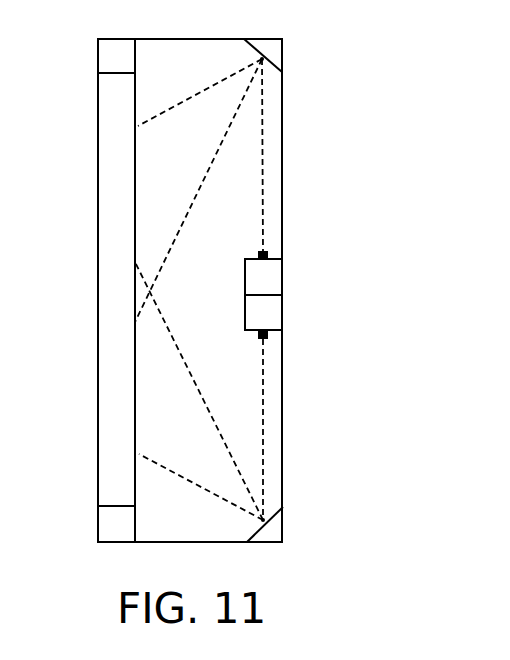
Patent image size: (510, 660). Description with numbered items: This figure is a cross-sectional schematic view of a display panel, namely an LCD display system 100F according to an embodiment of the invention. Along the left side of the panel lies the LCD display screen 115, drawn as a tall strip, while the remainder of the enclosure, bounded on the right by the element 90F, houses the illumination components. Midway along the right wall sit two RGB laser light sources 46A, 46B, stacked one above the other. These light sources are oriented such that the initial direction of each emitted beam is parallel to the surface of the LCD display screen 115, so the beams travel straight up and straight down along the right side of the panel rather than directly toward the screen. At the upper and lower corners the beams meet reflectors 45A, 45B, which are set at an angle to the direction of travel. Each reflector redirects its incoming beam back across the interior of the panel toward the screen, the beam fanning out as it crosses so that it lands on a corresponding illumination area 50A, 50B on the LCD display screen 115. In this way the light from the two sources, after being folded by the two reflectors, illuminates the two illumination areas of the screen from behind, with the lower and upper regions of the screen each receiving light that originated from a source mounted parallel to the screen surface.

The LCD display system 100F is at (318, 110).
The housing wall 90F is at (282, 173).
The LCD display screen 115 is at (98, 267).
The illumination area 50A is at (135, 380).
The illumination area 50B is at (135, 210).
The reflector 45A is at (283, 521).
The reflector 45B is at (282, 41).
The RGB laser light source 46A is at (263, 312).
The RGB laser light source 46B is at (263, 278).